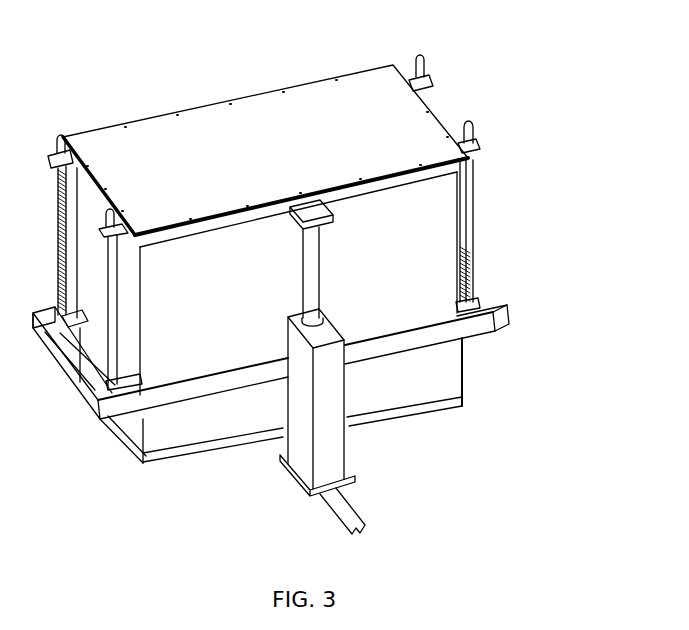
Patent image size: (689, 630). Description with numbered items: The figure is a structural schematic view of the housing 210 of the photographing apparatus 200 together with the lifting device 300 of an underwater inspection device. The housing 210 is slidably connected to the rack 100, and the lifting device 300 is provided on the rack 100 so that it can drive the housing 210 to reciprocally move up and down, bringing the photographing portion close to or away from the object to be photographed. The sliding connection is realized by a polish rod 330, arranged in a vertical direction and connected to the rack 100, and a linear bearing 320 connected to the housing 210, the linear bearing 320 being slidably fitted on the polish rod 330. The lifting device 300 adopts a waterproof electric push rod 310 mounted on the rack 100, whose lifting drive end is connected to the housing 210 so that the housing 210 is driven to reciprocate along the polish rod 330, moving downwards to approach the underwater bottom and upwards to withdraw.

The rack 100 is at (503, 310).
The photographing apparatus 200 is at (212, 489).
The housing 210 is at (172, 160).
The lifting device 300 is at (317, 294).
The waterproof electric push rod 310 is at (335, 385).
The linear bearing 320 is at (482, 140).
The polish rod 330 is at (482, 213).